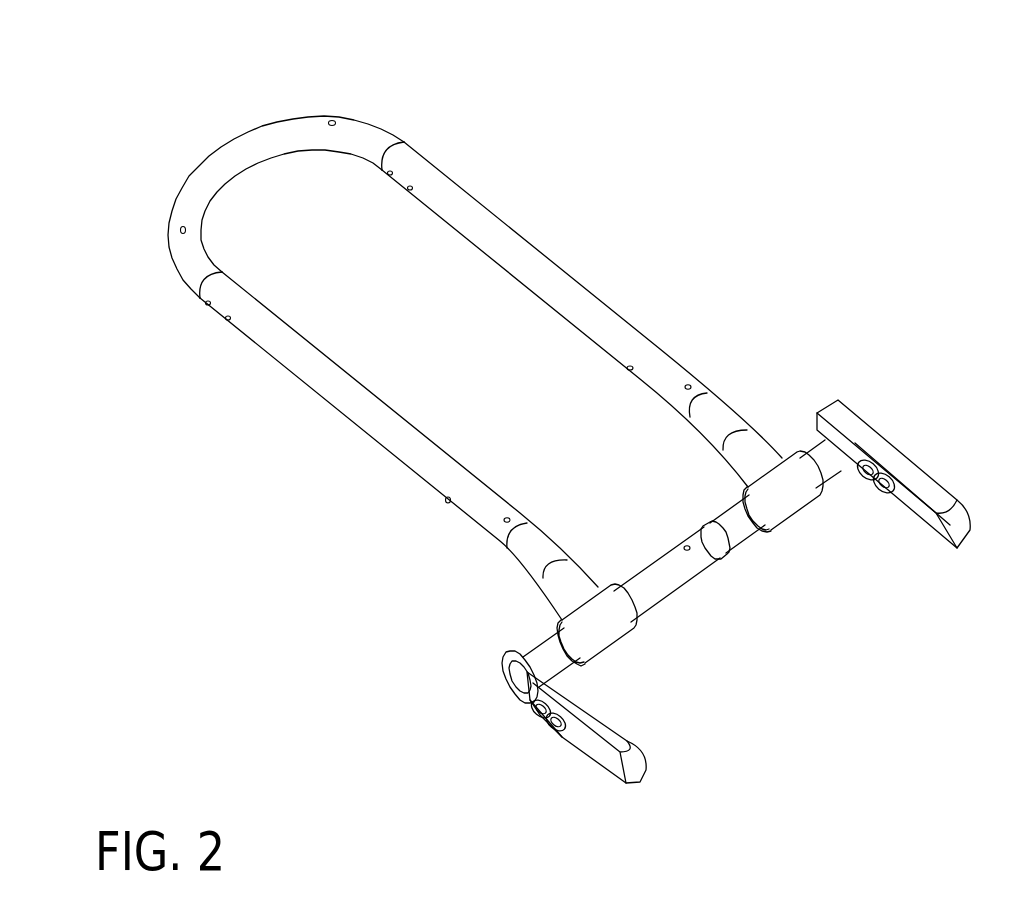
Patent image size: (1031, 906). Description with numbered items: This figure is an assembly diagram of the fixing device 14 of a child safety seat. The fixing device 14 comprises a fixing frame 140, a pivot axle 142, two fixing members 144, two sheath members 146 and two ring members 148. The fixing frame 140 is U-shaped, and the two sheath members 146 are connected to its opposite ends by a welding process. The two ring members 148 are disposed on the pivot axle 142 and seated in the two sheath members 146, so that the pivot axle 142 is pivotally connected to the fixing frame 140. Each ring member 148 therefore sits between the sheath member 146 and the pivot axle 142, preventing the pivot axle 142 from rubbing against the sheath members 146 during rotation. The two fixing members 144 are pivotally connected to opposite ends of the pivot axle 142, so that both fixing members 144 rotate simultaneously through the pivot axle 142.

The fixing device 14 is at (755, 130).
The fixing frame 140 is at (542, 257).
The pivot axle 142 is at (673, 577).
The fixing member 144 is at (927, 472).
The sheath member 146 is at (783, 455).
The ring member 148 is at (770, 533).